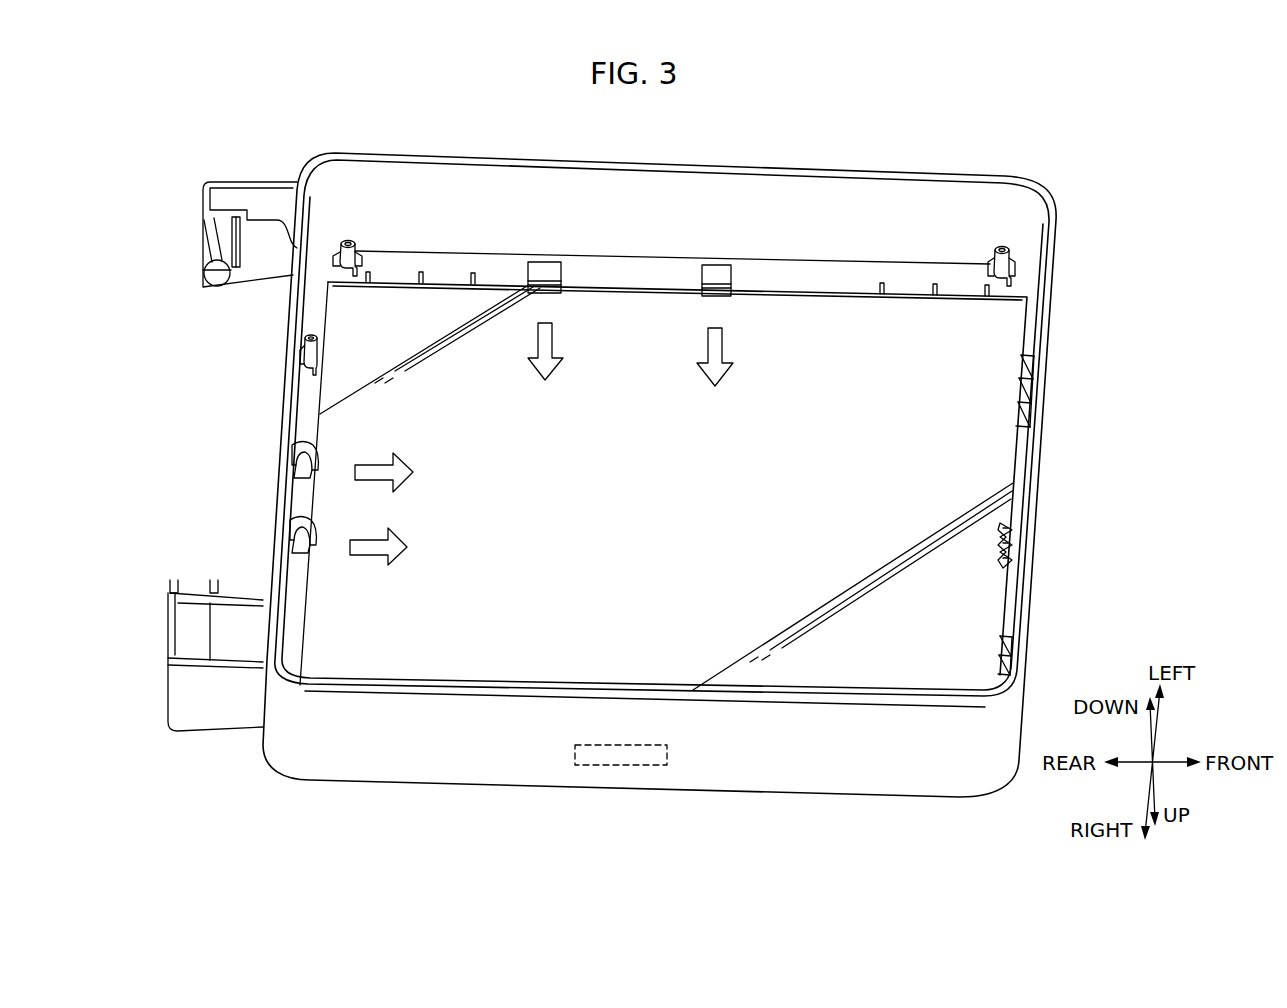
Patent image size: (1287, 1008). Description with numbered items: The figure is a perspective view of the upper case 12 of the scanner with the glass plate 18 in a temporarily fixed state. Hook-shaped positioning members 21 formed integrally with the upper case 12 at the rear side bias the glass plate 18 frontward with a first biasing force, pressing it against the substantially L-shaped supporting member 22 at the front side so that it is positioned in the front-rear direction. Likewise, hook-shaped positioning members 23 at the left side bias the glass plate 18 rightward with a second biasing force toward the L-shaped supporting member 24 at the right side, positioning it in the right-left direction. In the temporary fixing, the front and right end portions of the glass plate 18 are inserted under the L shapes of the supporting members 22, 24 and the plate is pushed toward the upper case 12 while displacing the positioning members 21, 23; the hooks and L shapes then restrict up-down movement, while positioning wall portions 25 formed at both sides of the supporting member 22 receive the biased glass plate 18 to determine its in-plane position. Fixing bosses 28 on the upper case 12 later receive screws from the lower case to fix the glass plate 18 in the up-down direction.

The upper case 12 is at (778, 162).
The glass plate 18 is at (852, 318).
The positioning members 21 is at (295, 444).
The supporting member 22 is at (1020, 544).
The positioning members 23 is at (710, 253).
The supporting member 24 is at (620, 766).
The positioning wall portions 25 is at (1032, 386).
The fixing bosses 28 is at (346, 240).